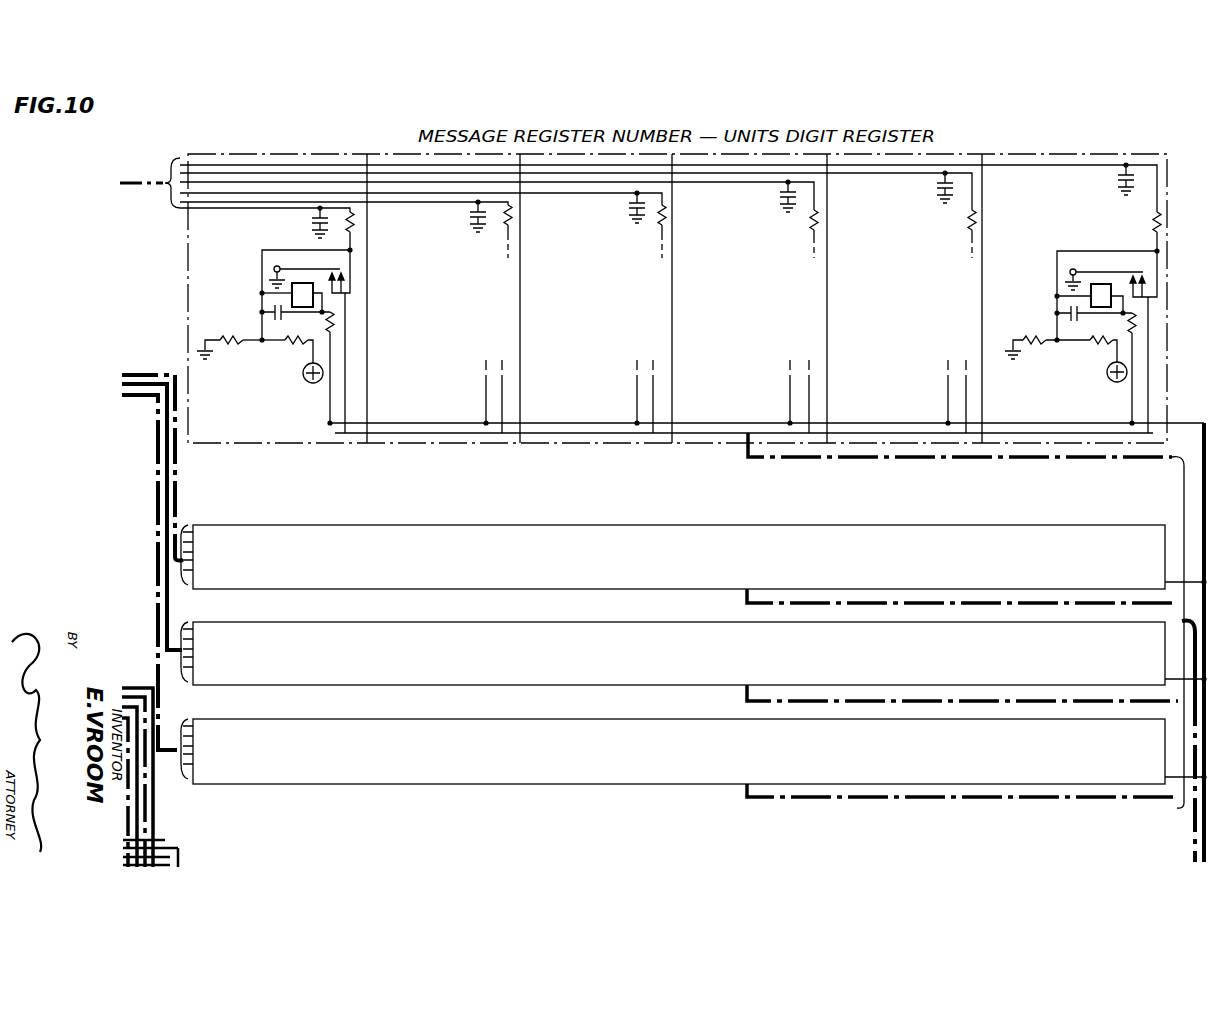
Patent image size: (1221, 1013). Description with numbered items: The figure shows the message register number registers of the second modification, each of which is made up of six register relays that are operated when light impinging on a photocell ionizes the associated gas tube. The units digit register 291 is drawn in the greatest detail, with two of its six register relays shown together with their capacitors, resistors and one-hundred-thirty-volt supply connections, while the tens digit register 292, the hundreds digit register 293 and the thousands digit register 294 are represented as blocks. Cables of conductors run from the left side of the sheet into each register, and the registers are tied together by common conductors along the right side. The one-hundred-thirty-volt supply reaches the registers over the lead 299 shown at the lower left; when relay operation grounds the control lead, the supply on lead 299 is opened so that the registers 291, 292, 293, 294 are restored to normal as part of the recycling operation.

The message register number units digit register 291 is at (188, 262).
The tens digit register 292 is at (213, 533).
The hundreds digit register 293 is at (215, 632).
The thousands digit register 294 is at (215, 729).
The lead 299 is at (178, 848).